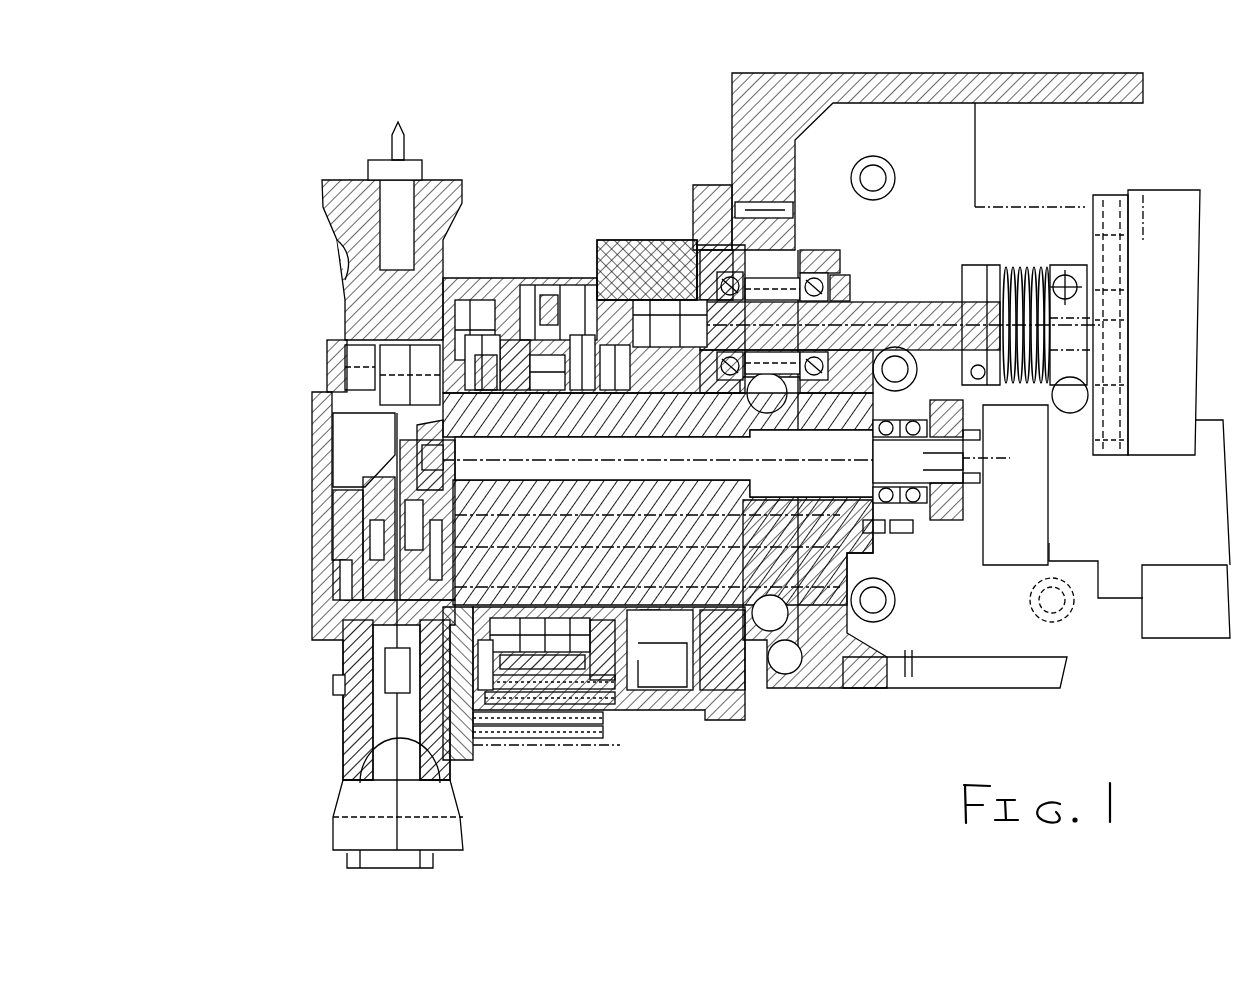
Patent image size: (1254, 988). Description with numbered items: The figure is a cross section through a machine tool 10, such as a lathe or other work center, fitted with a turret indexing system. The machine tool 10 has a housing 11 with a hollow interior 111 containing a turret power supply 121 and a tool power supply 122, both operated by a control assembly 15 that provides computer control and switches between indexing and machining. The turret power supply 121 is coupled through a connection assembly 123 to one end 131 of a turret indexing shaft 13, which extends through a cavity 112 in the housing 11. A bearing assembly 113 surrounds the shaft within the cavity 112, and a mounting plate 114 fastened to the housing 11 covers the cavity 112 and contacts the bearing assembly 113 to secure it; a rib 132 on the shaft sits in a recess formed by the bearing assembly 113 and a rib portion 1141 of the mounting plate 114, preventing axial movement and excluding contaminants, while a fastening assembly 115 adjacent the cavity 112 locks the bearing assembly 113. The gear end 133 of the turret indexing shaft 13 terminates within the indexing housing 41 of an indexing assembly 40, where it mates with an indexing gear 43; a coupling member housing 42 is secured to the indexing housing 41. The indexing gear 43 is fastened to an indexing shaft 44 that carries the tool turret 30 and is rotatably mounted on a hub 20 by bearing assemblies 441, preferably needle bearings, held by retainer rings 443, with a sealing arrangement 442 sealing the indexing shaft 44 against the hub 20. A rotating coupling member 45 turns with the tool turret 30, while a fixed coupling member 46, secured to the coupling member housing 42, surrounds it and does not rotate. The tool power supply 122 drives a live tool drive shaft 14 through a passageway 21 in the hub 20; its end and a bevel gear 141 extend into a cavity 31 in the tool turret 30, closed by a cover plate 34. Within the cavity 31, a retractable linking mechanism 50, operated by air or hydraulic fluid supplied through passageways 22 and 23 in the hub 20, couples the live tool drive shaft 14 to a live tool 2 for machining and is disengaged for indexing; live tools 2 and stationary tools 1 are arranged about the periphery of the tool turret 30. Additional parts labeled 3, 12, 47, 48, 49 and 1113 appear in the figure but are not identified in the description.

The stationary tools 1 is at (397, 148).
The live tools 2 is at (347, 833).
The cylinder body 3 is at (455, 605).
The machine tool 10 is at (1115, 512).
The housing 11 is at (833, 690).
The bearing assembly 12 is at (928, 533).
The turret indexing shaft 13 is at (885, 307).
The live tool drive shaft 14 is at (820, 480).
The control assembly 15 is at (1192, 618).
The hub 20 is at (713, 597).
The passageway 21 is at (700, 593).
The passageway 22 is at (475, 543).
The passageway 23 is at (460, 600).
The tool turret 30 is at (340, 258).
The cavity 31 is at (343, 442).
The cover plate 34 is at (333, 390).
The indexing assembly 40 is at (500, 193).
The indexing housing 41 is at (712, 200).
The coupling member housing 42 is at (487, 358).
The indexing gear 43 is at (587, 360).
The indexing shaft 44 is at (550, 630).
The rotating coupling member 45 is at (345, 338).
The fixed coupling member 46 is at (497, 353).
The ring 47 is at (480, 355).
The nut 48 is at (553, 357).
The washer 49 is at (580, 350).
The retractable linking mechanism 50 is at (345, 550).
The hollow interior 111 is at (930, 182).
The cavity 112 is at (810, 262).
The bearing assembly 113 is at (737, 273).
The mounting plate 114 is at (712, 300).
The fastening assembly 115 is at (840, 290).
The turret power supply 121 is at (1177, 273).
The tool power supply 122 is at (1035, 481).
The connection assembly 123 is at (1018, 287).
The end 131 is at (970, 313).
The rib 132 is at (700, 303).
The gear end 133 is at (587, 353).
The bevel gear 141 is at (423, 437).
The bearing assemblies 441 is at (520, 633).
The sealing arrangement 442 is at (460, 595).
The retainer rings 443 is at (525, 620).
The bearing 1113 is at (800, 277).
The rib portion 1141 is at (610, 353).